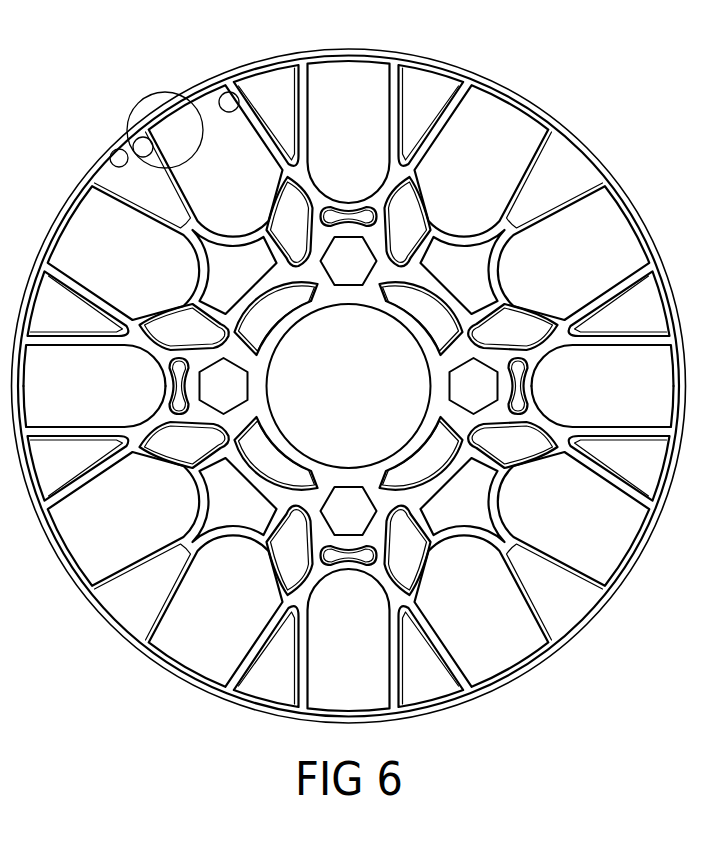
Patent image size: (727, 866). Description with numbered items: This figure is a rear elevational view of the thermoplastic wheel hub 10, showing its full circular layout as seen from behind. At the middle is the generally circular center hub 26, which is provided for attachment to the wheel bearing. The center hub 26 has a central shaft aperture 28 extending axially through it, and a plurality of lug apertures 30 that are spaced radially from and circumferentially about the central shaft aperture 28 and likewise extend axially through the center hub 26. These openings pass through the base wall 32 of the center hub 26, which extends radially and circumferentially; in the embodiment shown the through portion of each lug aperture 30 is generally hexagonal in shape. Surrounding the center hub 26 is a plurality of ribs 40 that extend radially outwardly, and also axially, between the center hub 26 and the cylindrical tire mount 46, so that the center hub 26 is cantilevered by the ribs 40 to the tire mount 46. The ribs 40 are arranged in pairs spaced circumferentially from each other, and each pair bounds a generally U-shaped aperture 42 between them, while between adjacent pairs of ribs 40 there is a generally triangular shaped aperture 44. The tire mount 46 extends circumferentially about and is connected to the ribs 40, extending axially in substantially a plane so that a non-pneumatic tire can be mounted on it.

The thermoplastic wheel hub 10 is at (616, 110).
The center hub 26 is at (492, 478).
The central shaft aperture 28 is at (283, 433).
The lug apertures 30 is at (225, 387).
The base wall 32 is at (448, 387).
The ribs 40 is at (230, 92).
The U-shaped aperture 42 is at (190, 98).
The triangular shaped apertures 44 is at (112, 152).
The tire mount 46 is at (622, 196).